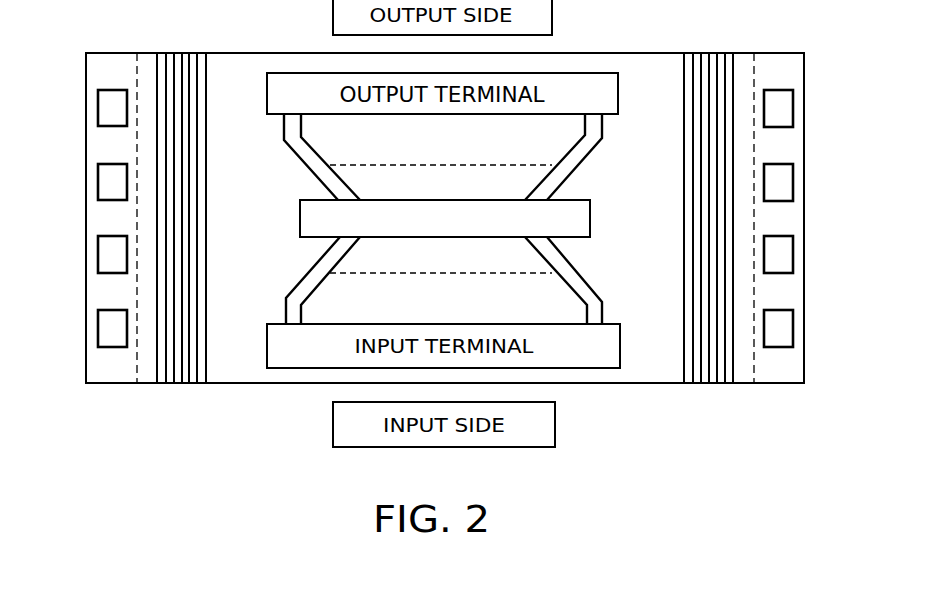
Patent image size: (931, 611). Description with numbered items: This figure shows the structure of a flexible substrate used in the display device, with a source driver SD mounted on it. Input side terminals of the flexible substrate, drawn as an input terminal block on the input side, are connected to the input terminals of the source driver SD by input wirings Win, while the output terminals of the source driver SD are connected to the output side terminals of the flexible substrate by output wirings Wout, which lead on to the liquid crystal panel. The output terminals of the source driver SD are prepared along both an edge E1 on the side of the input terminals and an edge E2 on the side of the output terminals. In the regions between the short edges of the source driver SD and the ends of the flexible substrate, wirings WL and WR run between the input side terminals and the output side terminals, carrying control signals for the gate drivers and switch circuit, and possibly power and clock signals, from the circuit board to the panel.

The source driver SD is at (590, 222).
The edge of the source driver E1 is at (575, 240).
The edge of the source driver E2 is at (580, 200).
The output wirings Wout is at (308, 168).
The input wirings Win is at (308, 268).
The wiring WL is at (206, 387).
The wiring WR is at (735, 387).